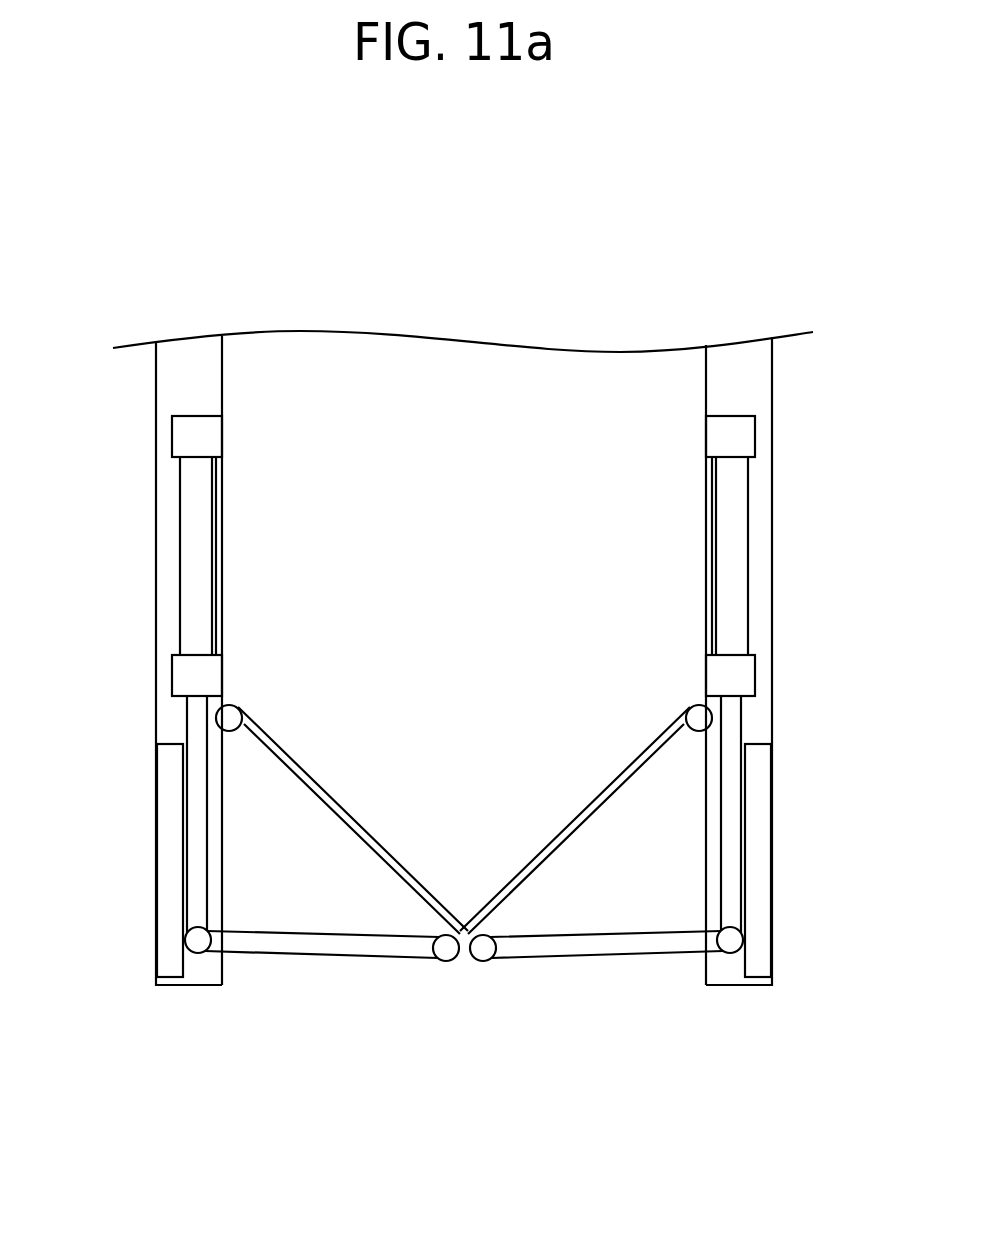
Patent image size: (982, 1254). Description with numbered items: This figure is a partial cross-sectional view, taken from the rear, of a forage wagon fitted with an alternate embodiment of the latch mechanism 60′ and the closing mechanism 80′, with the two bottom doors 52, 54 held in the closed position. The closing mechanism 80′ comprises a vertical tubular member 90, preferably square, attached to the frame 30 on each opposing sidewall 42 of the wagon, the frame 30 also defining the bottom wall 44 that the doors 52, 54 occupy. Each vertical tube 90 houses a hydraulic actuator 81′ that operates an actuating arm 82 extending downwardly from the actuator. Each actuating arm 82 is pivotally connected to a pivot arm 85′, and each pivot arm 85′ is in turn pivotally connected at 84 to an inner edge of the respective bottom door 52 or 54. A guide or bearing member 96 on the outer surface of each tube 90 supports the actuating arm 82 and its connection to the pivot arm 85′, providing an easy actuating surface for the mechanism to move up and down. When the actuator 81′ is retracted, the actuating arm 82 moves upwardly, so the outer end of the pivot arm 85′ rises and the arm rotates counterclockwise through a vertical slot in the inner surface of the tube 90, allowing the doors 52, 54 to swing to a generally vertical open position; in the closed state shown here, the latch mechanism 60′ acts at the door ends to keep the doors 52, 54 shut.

The closing mechanism 80′ is at (808, 452).
The sidewall 42 is at (670, 478).
The tubular member 90 is at (155, 552).
The frame 30 is at (222, 552).
The hydraulic actuator 81′ is at (202, 622).
The actuating arm 82 is at (195, 728).
The guide or bearing member 96 is at (170, 810).
The bottom door 54 is at (325, 797).
The bottom door 52 is at (607, 797).
The bottom wall 44 is at (470, 888).
The pivot arm 85′ is at (378, 960).
The pivotal connection 84 is at (198, 942).
The latch mechanism 60′ is at (243, 967).